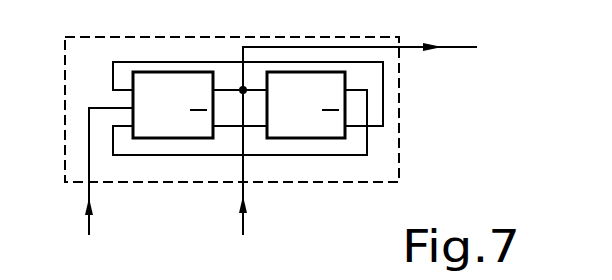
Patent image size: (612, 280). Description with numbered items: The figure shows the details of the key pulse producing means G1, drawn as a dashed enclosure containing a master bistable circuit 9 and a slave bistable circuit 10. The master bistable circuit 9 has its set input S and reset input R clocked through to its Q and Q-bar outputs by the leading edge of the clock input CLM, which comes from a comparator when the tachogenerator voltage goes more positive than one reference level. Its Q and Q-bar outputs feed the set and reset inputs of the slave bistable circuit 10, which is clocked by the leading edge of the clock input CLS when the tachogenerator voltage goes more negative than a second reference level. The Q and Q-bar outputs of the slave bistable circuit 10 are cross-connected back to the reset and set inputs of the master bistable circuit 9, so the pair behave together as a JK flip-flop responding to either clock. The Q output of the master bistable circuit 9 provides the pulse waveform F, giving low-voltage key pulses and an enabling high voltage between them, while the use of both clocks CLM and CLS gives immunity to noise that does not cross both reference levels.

The master bistable circuit 9 is at (168, 123).
The slave bistable circuit 10 is at (308, 122).
The key pulse producing means G1 is at (399, 143).
The pulse waveform F is at (438, 40).
The master clock input CLM is at (98, 187).
The slave clock input CLS is at (239, 178).